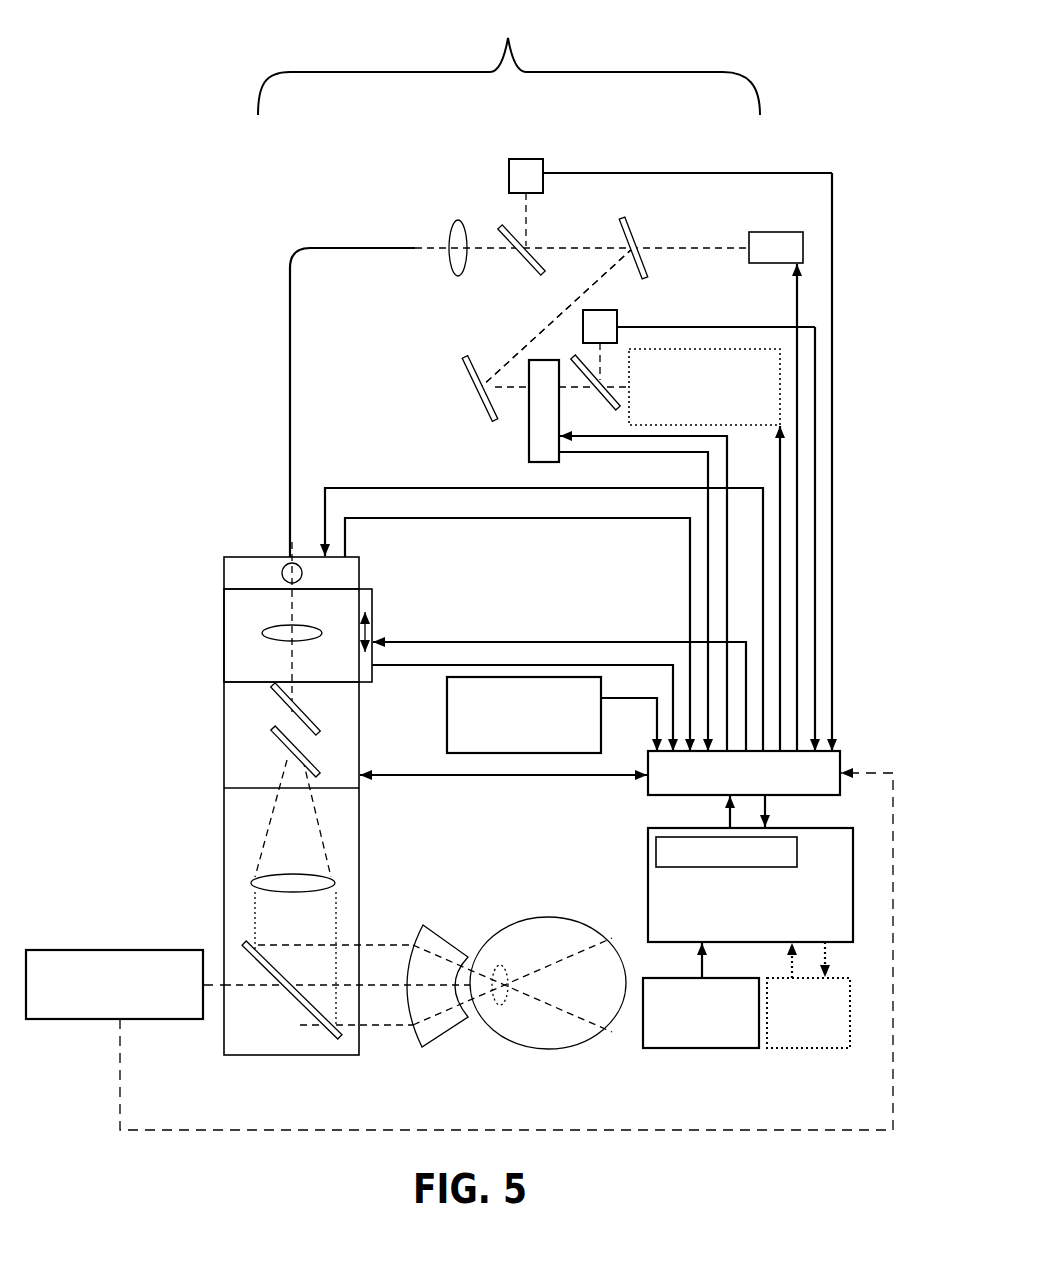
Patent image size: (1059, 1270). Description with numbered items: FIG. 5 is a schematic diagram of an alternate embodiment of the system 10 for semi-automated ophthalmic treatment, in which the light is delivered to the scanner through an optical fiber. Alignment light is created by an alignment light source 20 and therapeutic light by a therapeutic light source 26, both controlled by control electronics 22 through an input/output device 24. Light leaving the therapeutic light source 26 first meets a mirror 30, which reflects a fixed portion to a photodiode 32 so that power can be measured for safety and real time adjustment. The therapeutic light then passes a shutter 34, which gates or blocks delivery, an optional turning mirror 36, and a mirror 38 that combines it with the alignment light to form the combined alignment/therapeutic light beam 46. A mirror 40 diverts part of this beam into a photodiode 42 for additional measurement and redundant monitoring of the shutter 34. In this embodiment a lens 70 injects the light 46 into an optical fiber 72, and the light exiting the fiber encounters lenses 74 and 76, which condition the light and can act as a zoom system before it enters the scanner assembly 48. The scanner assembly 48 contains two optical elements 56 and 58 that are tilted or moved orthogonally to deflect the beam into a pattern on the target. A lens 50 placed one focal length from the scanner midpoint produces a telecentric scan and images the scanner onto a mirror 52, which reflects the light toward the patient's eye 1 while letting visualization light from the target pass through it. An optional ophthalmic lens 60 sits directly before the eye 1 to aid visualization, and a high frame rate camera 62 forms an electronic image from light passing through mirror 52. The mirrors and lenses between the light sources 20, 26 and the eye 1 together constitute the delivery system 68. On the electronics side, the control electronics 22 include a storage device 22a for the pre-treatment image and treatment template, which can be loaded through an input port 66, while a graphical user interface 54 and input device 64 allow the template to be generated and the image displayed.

The patient's eye 1 is at (566, 918).
The system 10 is at (828, 122).
The alignment light source 20 is at (771, 232).
The control electronics 22 is at (741, 940).
The storage device 22a is at (778, 867).
The input/output device 24 is at (750, 786).
The therapeutic light source 26 is at (689, 398).
The mirror 30 is at (612, 398).
The photodiode 32 is at (618, 320).
The shutter 34 is at (529, 438).
The mirror 36 is at (470, 391).
The mirror 38 is at (646, 240).
The mirror 40 is at (530, 270).
The photodiode 42 is at (526, 159).
The combined alignment/therapeutic light beam 46 is at (595, 246).
The scanner assembly 48 is at (224, 722).
The lens 50 is at (336, 882).
The mirror 52 is at (306, 1012).
The graphical user interface 54 is at (797, 1038).
The optical element 56 is at (320, 726).
The optical element 58 is at (320, 766).
The ophthalmic lens 60 is at (440, 938).
The camera 62 is at (103, 1012).
The input device 64 is at (513, 742).
The input port 66 is at (690, 1038).
The delivery system 68 is at (509, 59).
The lens 70 is at (460, 220).
The optical fiber 72 is at (322, 246).
The lens 74 is at (282, 568).
The lens 76 is at (262, 633).